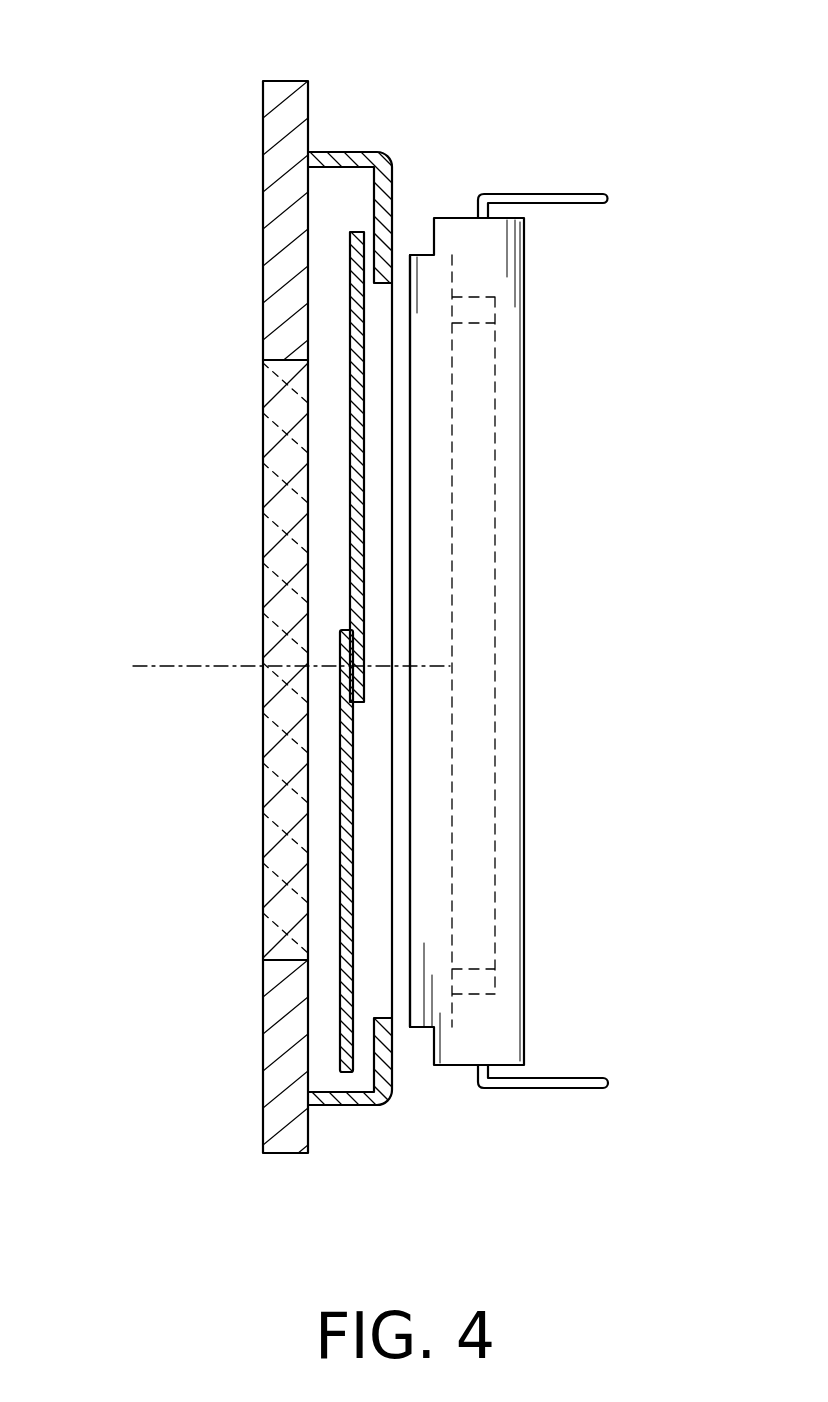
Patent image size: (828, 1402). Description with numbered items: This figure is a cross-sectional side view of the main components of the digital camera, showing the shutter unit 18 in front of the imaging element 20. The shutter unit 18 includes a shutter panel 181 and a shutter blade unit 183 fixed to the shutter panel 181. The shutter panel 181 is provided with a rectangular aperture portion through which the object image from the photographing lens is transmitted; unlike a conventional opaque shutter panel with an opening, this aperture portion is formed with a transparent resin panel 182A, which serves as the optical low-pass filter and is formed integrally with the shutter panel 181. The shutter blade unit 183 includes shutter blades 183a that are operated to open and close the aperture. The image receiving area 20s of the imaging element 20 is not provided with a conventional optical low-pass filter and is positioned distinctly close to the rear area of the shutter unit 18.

The shutter unit 18 is at (364, 88).
The shutter panel 181 is at (283, 1057).
The transparent resin panel 182A is at (283, 612).
The shutter blade unit 183 is at (393, 207).
The shutter blades 183a is at (352, 410).
The imaging element 20 is at (523, 563).
The image receiving area 20s is at (412, 988).